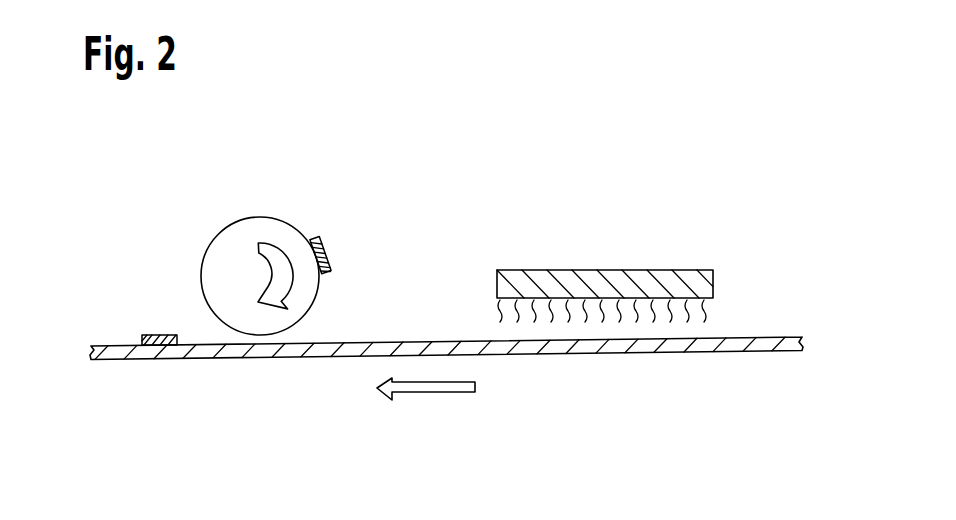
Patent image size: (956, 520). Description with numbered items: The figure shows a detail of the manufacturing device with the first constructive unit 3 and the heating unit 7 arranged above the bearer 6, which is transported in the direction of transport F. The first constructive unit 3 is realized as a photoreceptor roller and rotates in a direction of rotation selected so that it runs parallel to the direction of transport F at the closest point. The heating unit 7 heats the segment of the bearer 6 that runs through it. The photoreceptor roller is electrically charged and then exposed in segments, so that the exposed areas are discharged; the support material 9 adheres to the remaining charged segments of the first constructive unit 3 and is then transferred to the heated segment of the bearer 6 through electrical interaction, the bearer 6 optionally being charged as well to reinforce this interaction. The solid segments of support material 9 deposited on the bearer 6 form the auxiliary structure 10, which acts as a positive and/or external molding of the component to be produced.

The first constructive unit 3 is at (262, 228).
The bearer 6 is at (607, 347).
The heating unit 7 is at (678, 282).
The support material 9 is at (160, 334).
The auxiliary structure 10 is at (435, 348).
The direction of transport F is at (432, 390).